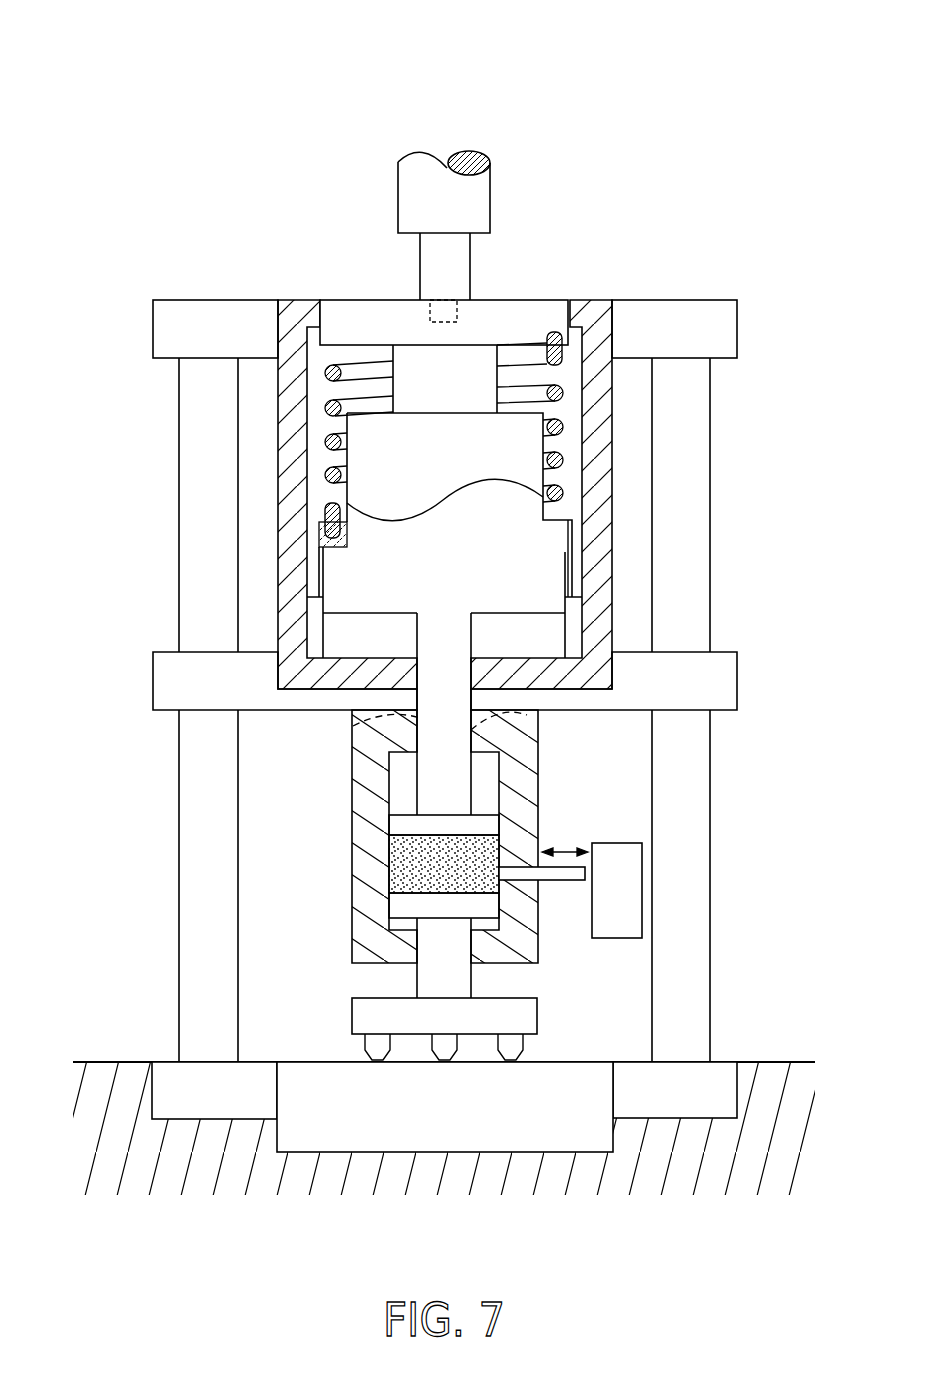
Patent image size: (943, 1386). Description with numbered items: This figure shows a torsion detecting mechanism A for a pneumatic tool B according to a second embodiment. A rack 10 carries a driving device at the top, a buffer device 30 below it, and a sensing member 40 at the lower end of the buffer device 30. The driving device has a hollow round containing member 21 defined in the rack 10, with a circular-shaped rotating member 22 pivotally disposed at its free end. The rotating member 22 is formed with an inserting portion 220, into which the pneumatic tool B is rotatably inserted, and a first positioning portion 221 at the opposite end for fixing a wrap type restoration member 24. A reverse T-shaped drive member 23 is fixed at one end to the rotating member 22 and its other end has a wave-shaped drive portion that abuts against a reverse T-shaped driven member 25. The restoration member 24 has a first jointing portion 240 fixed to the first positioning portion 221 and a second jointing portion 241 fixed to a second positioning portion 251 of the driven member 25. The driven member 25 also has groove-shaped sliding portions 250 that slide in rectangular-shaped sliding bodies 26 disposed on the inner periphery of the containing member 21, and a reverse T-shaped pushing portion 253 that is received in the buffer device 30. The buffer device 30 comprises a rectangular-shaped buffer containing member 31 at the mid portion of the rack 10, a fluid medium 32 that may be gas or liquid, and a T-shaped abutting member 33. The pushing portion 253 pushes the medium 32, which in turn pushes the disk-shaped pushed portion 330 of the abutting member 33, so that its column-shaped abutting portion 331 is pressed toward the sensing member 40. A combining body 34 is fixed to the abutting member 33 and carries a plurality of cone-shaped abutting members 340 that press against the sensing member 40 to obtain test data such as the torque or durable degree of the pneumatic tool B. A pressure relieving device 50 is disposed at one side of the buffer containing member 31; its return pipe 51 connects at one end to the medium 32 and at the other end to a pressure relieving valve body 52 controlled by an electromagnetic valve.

The pressing device A is at (677, 130).
The pneumatic tool B is at (425, 182).
The rack 10 is at (670, 307).
The containing member 21 is at (598, 430).
The rotating member 22 is at (342, 322).
The inserting portion 220 is at (430, 313).
The first positioning portion 221 is at (552, 330).
The drive member 23 is at (352, 428).
The restoration member 24 is at (517, 360).
The first jointing portion 240 is at (562, 357).
The second jointing portion 241 is at (322, 548).
The driven member 25 is at (520, 588).
The sliding portions 250 is at (568, 565).
The second positioning portion 251 is at (325, 532).
The pushing portion 253 is at (427, 738).
The sliding bodies 26 is at (578, 636).
The buffer device 30 is at (333, 818).
The buffer containing member 31 is at (363, 912).
The medium 32 is at (475, 865).
The pushed portion 330 is at (413, 888).
The abutting member 33 is at (430, 977).
The abutting portion 331 is at (442, 998).
The combining body 34 is at (528, 1020).
The abutting members 340 is at (513, 1047).
The sensing member 40 is at (615, 1105).
The pressure relieving device 50 is at (648, 896).
The return pipe 51 is at (586, 868).
The pressure relieving valve body 52 is at (618, 868).